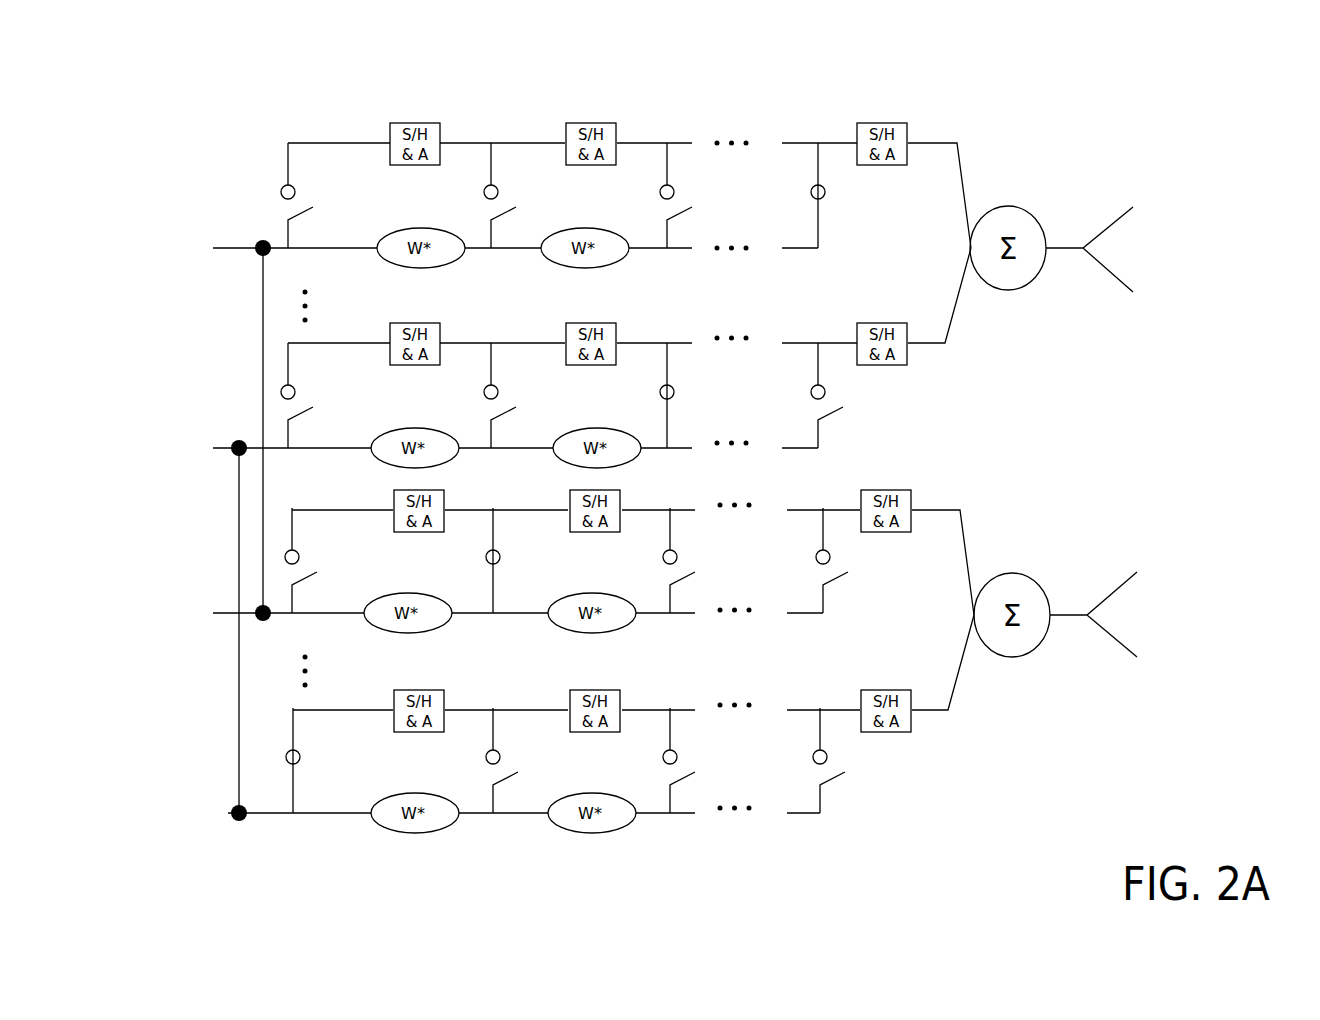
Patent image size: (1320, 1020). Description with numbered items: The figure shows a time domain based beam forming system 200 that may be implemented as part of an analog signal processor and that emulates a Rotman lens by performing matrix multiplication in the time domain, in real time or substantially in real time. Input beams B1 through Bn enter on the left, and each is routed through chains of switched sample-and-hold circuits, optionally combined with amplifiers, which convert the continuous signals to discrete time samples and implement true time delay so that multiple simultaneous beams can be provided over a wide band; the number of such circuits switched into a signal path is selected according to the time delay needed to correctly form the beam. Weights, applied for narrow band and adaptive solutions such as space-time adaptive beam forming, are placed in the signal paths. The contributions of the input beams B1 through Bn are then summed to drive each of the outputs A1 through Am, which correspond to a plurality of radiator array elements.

The system 200 is at (134, 95).
The input beam B1 is at (434, 426).
The input beam Bn is at (434, 626).
The radiator array element A1 is at (1051, 249).
The radiator array element Am is at (1055, 614).